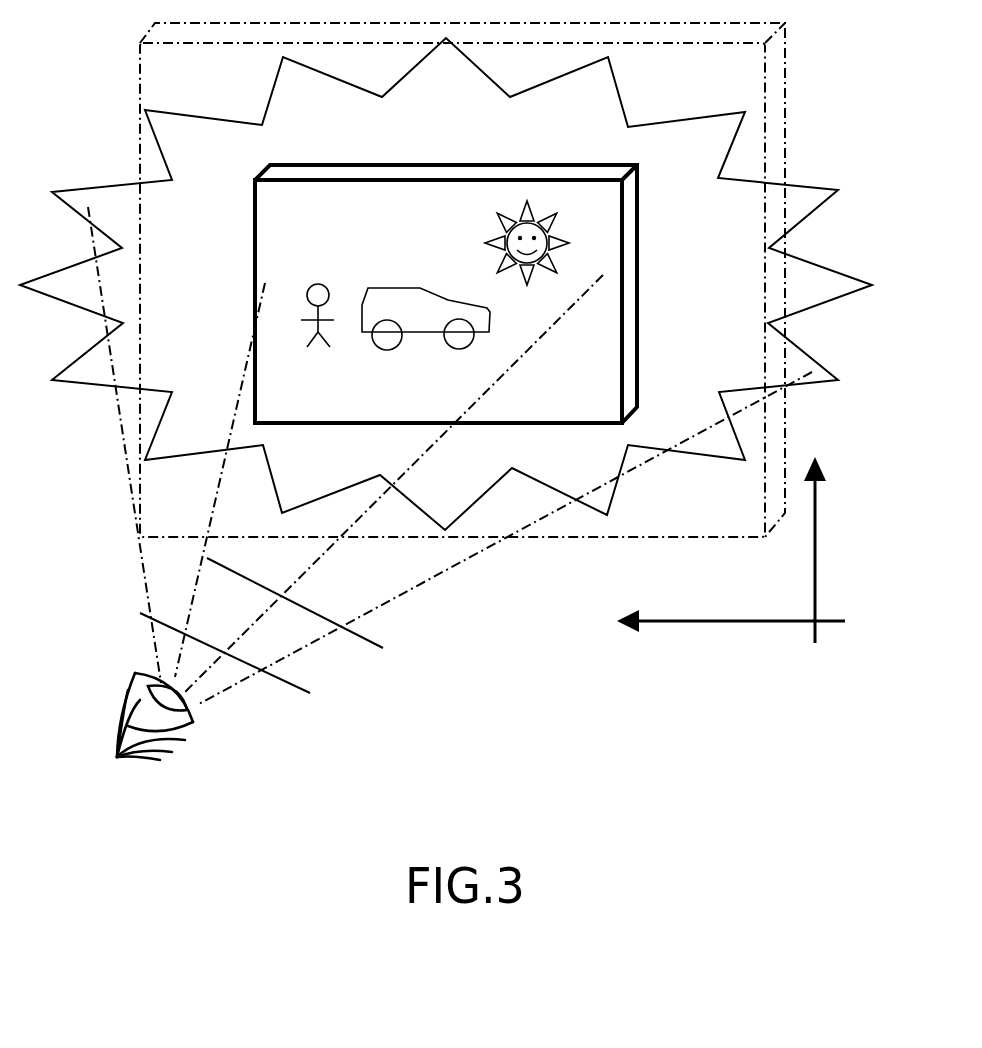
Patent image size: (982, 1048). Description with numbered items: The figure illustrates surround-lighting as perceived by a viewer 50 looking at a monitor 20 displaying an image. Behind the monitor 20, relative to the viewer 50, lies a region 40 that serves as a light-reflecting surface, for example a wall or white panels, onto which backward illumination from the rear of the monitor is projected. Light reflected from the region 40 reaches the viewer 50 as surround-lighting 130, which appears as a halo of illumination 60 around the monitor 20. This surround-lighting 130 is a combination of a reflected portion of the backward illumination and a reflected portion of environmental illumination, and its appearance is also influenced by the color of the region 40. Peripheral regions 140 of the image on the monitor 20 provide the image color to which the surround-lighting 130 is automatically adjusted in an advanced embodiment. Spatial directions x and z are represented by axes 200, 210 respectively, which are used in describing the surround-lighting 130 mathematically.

The monitor 20 is at (373, 226).
The region 40 is at (673, 84).
The viewer 50 is at (206, 770).
The halo of illumination 60 is at (703, 270).
The surround-lighting 130 is at (302, 648).
The peripheral regions of the monitor 140 is at (313, 562).
The x axis 200 is at (727, 623).
The z axis 210 is at (815, 559).